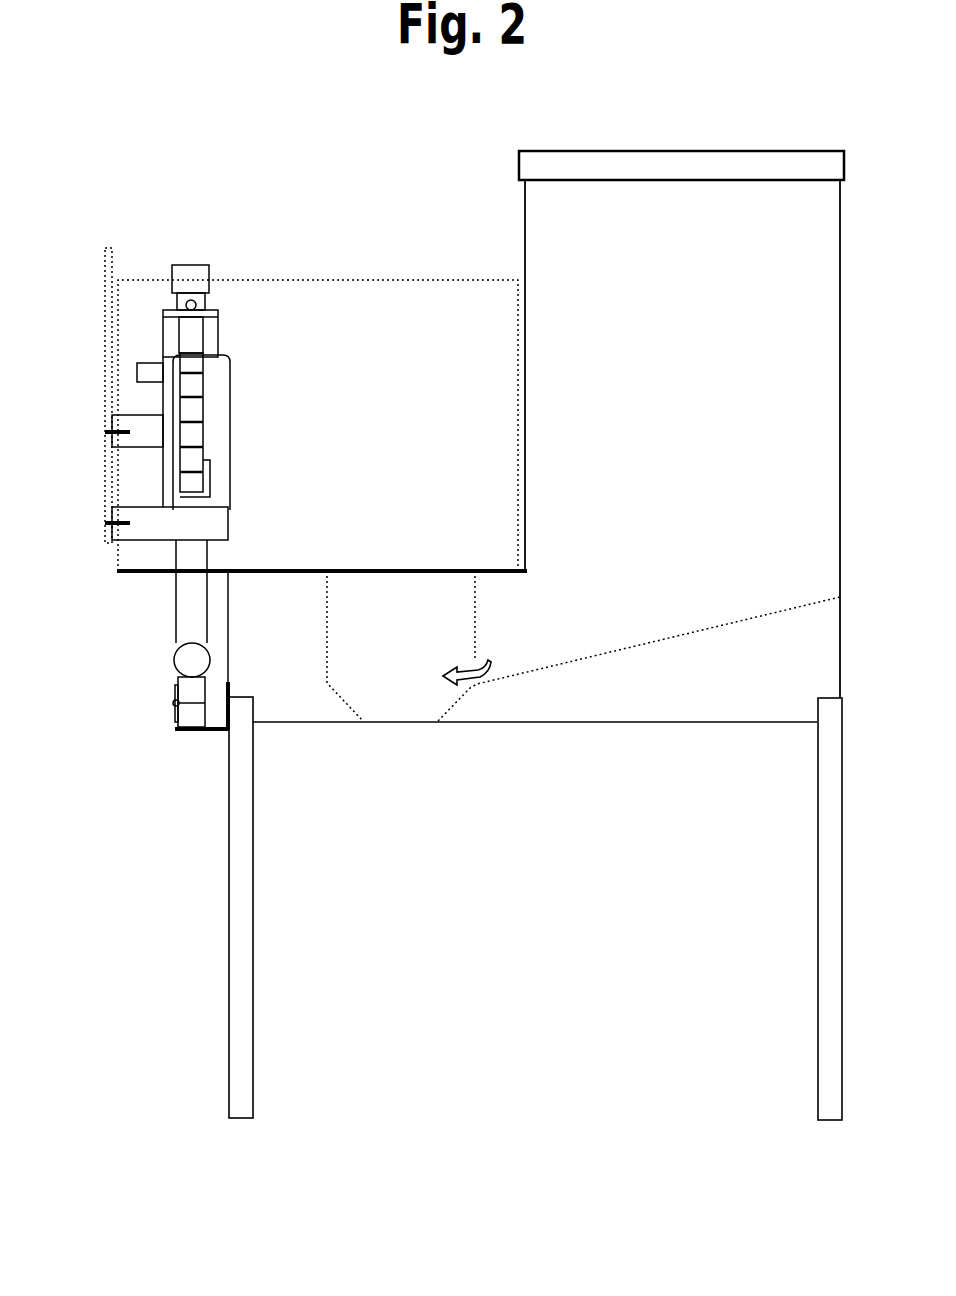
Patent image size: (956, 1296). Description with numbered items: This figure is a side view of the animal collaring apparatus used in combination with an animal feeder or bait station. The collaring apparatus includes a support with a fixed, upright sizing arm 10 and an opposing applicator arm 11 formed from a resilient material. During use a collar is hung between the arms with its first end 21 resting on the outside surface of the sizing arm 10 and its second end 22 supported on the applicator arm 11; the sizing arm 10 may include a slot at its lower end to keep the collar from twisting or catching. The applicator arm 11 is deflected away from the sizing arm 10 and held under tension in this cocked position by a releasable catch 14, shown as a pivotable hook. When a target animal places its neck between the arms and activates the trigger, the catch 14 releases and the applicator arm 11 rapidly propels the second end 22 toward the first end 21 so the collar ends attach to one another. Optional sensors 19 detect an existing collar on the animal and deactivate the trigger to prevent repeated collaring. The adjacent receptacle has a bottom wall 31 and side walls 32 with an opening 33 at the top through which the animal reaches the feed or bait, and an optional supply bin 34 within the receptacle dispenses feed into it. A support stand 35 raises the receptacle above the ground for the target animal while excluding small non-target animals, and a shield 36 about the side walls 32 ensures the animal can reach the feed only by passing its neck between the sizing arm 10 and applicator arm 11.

The sizing arm 10 is at (222, 470).
The applicator arm 11 is at (218, 347).
The releasable catch 14 is at (195, 310).
The sensors 19 is at (137, 377).
The first end 21 is at (197, 387).
The second end 22 is at (198, 329).
The bottom wall 31 is at (557, 723).
The side walls 32 is at (292, 690).
The opening 33 is at (375, 568).
The supply bin 34 is at (681, 424).
The support stand 35 is at (247, 855).
The shield 36 is at (355, 278).